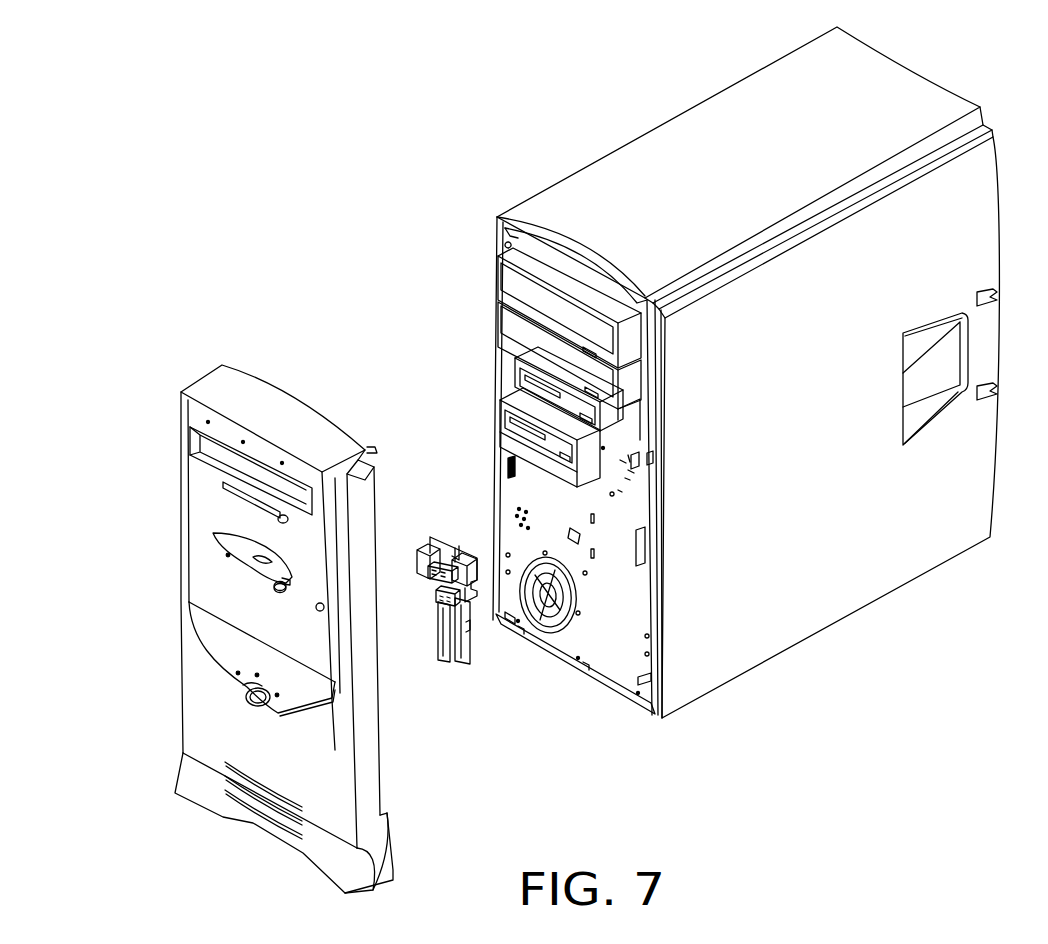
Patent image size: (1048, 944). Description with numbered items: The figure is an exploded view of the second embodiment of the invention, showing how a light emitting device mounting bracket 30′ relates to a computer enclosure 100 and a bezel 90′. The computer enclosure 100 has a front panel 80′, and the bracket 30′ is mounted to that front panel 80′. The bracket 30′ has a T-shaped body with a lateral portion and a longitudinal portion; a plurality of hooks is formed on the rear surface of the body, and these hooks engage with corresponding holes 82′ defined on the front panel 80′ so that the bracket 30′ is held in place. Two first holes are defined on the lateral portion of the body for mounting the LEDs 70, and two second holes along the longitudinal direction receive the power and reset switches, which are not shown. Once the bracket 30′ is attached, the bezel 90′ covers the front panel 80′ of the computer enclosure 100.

The computer enclosure 100 is at (613, 140).
The front panel 80′ is at (609, 652).
The holes 82′ is at (592, 558).
The bracket 30′ is at (448, 522).
The LEDs 70 is at (417, 575).
The bezel 90′ is at (250, 833).